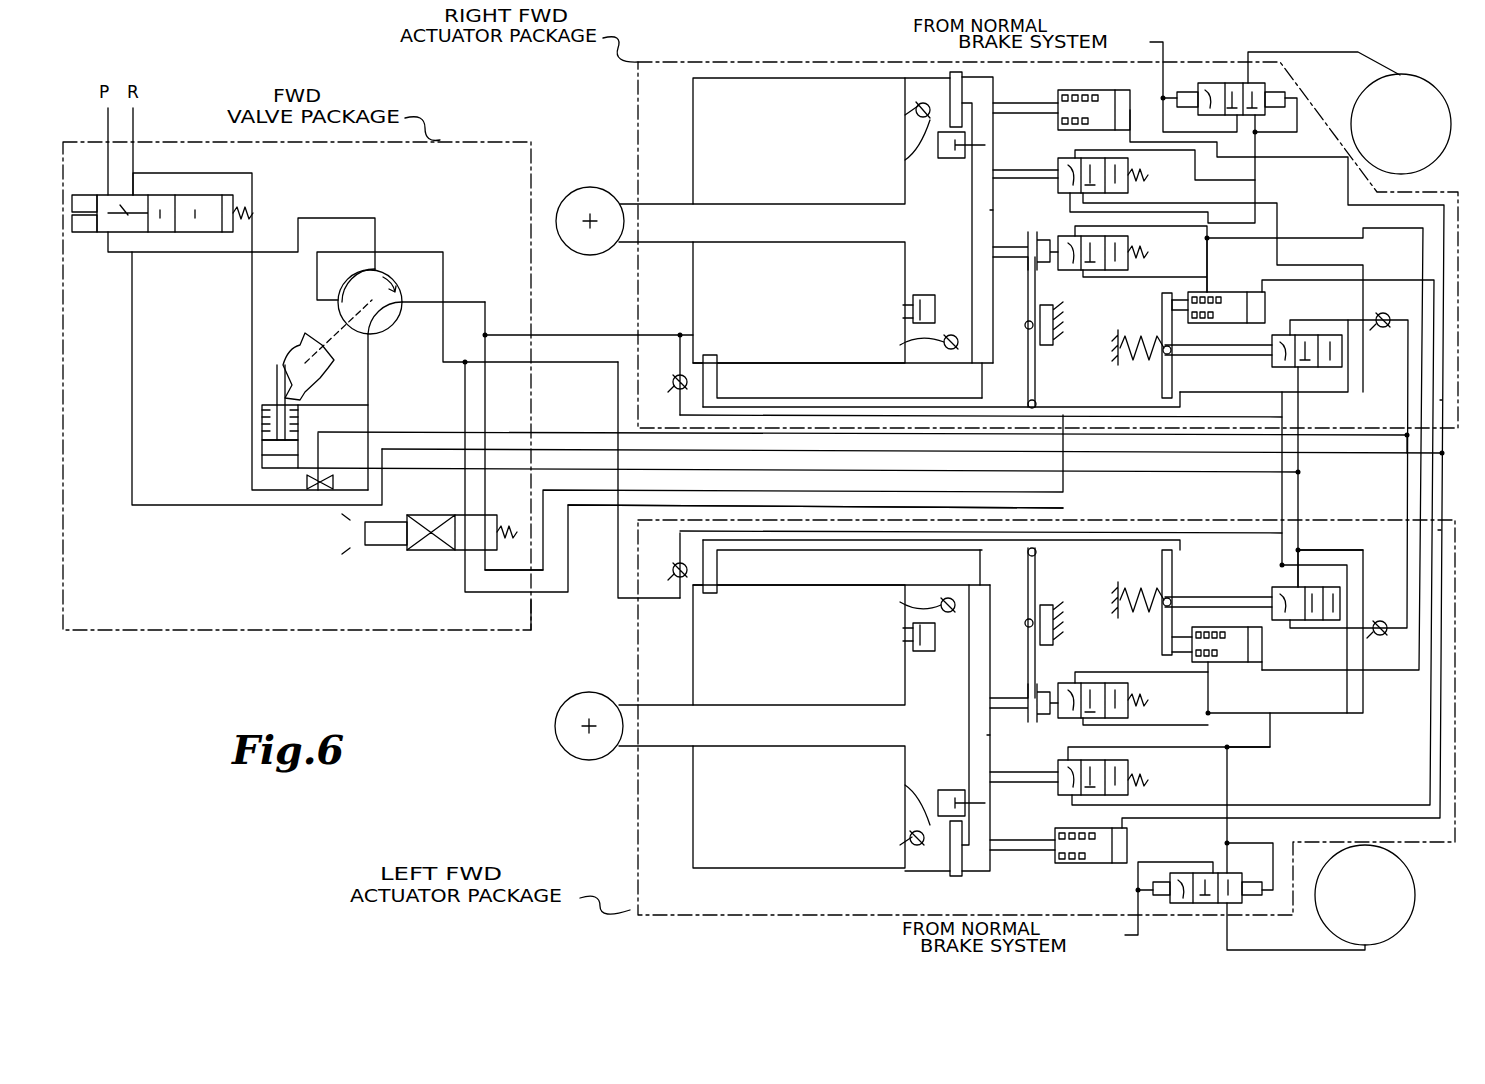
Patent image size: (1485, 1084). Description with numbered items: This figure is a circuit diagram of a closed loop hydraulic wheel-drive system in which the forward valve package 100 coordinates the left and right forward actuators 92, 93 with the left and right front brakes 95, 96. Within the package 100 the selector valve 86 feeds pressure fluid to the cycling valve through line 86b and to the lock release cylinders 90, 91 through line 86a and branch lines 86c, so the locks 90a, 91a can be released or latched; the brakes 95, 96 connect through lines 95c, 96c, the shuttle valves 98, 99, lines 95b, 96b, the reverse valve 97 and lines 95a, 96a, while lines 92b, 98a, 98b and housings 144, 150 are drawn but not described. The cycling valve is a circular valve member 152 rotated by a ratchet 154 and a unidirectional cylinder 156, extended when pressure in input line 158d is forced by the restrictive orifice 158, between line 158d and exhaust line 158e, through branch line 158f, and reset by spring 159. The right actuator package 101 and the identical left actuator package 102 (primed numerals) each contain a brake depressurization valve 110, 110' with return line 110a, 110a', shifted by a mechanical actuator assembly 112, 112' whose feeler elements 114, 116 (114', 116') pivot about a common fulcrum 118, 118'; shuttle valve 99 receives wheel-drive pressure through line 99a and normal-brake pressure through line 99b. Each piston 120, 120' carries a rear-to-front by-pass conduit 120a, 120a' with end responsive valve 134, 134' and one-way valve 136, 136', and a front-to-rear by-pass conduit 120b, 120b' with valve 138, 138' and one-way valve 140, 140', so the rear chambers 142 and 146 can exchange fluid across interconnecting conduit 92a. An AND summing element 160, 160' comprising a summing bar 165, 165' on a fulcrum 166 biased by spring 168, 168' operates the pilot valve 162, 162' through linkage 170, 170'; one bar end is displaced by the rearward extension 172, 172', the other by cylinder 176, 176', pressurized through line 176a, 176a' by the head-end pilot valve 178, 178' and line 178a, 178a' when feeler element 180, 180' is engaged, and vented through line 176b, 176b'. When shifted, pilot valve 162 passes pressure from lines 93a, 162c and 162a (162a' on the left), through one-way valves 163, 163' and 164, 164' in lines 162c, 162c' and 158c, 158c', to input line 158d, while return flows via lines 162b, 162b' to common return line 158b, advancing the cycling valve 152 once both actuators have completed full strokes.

The selector valve 86 is at (100, 238).
The port line 86a is at (132, 345).
The port line 86b is at (188, 252).
The branch lines 86c is at (1420, 455).
The lock release 90 is at (1098, 865).
The lock 90a is at (957, 878).
The lock release 91 is at (1104, 80).
The lock 91a is at (952, 65).
The left forward actuator 92 is at (687, 776).
The interconnecting conduit 92a is at (970, 449).
The line 92b is at (576, 370).
The right forward actuator 93 is at (685, 288).
The hydraulic line 93a is at (590, 318).
The left front brake 95 is at (1398, 926).
The hydraulic line 95a is at (462, 395).
The hydraulic line 95b is at (551, 606).
The hydraulic line 95c is at (1324, 950).
The right front brake 96 is at (1425, 80).
The hydraulic line 96a is at (485, 388).
The hydraulic line 96b is at (530, 510).
The hydraulic line 96c is at (1325, 52).
The reverse valve 97 is at (412, 561).
The shuttle valve 98 is at (1183, 911).
The line 98a is at (1230, 835).
The line 98b is at (1102, 937).
The right brake shuttle valve 99 is at (1219, 70).
The input port line 99a is at (1260, 148).
The input port line 99b is at (1150, 42).
The forward valve package 100 is at (505, 142).
The right actuator package 101 is at (638, 130).
The left actuator package 102 is at (630, 820).
The brake depressurization valve 110 is at (1134, 258).
The brake depressurization valve 110' is at (1134, 698).
The port line 110a is at (1315, 438).
The port line 110a' is at (1315, 633).
The mechanical actuator assembly 112 is at (974, 332).
The mechanical actuator assembly 112' is at (1010, 623).
The feeler element 114 is at (985, 251).
The feeler element 114' is at (985, 703).
The feeler element 116 is at (843, 356).
The feeler element 116' is at (841, 579).
The common fulcrum 118 is at (1031, 335).
The common fulcrum 118' is at (1027, 637).
The piston 120 is at (955, 237).
The piston 120' is at (951, 710).
The rear-to-front by-pass conduit 120a is at (909, 345).
The rear-to-front by-pass conduit 120a' is at (917, 584).
The front-to-rear by-pass conduit 120b is at (890, 101).
The front-to-rear by-pass conduit 120b' is at (912, 862).
The forward end responsive by-pass valve 134 is at (879, 318).
The forward end responsive by-pass valve 134' is at (882, 621).
The rear-to-front one-way valve 136 is at (942, 310).
The rear-to-front one-way valve 136' is at (934, 653).
The rear end responsive by-pass valve 138 is at (955, 160).
The rear end responsive by-pass valve 138' is at (955, 790).
The front-to-rear one-way valve 140 is at (889, 140).
The front-to-rear one-way valve 140' is at (892, 805).
The rear chamber 142 is at (995, 210).
The actuator housing 144 is at (800, 93).
The rear chamber 146 is at (993, 743).
The actuator housing 150 is at (740, 670).
The circular valve member 152 is at (380, 282).
The ratchet 154 is at (275, 340).
The unidirectional cylinder 156 is at (262, 448).
The restrictive orifice 158 is at (325, 482).
The common return line 158b is at (1130, 473).
The port line 158c is at (1405, 399).
The port line 158c' is at (1383, 515).
The input line 158d is at (1140, 433).
The exhaust line 158e is at (252, 375).
The branch line 158f is at (287, 478).
The spring 159 is at (262, 420).
The AND summing element 160 is at (1191, 345).
The AND summing element 160' is at (1193, 602).
The pilot valve 162 is at (1340, 455).
The pilot valve 162' is at (1267, 586).
The pressure fluid line 162a is at (1264, 366).
The pressure fluid line 162a' is at (1273, 625).
The return line 162b is at (1311, 478).
The return line 162b' is at (1330, 541).
The port line 162c is at (918, 419).
The port line 162c' is at (927, 542).
The one-way valve 163 is at (664, 375).
The one-way valve 163' is at (663, 567).
The one-way valve 164 is at (1390, 333).
The one-way valve 164' is at (1386, 610).
The summing bar 165 is at (1135, 362).
The summing bar 165' is at (1122, 586).
The central fulcrum 166 is at (1176, 332).
The supporting spring 168 is at (1138, 325).
The supporting spring 168' is at (1127, 621).
The linkage 170 is at (1217, 367).
The linkage 170' is at (1217, 583).
The rearward extension 172 is at (964, 404).
The rearward extension 172' is at (966, 523).
The single-acting cylinder 176 is at (1218, 291).
The cylinder 176' is at (1248, 648).
The hydraulic line 176a is at (1253, 524).
The hydraulic line 176a' is at (1283, 492).
The vent line 176b is at (1235, 265).
The vent line 176b' is at (1237, 687).
The right head-end pilot valve 178 is at (1156, 171).
The head-end pilot valve 178' is at (1164, 758).
The port line 178a is at (1180, 211).
The port line 178a' is at (1282, 746).
The feeler element 180 is at (1025, 156).
The feeler element 180' is at (1024, 793).